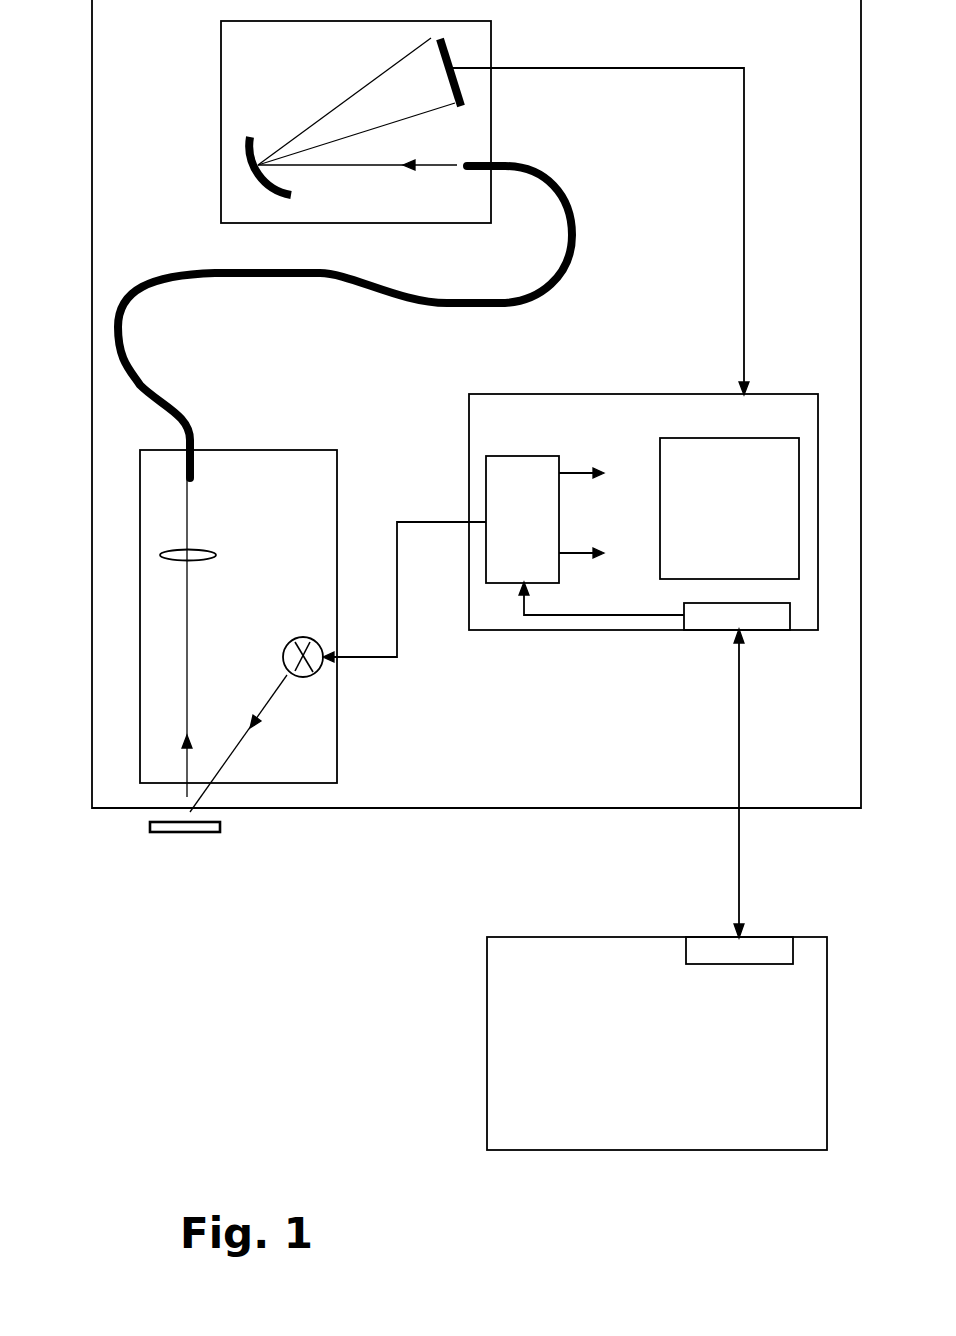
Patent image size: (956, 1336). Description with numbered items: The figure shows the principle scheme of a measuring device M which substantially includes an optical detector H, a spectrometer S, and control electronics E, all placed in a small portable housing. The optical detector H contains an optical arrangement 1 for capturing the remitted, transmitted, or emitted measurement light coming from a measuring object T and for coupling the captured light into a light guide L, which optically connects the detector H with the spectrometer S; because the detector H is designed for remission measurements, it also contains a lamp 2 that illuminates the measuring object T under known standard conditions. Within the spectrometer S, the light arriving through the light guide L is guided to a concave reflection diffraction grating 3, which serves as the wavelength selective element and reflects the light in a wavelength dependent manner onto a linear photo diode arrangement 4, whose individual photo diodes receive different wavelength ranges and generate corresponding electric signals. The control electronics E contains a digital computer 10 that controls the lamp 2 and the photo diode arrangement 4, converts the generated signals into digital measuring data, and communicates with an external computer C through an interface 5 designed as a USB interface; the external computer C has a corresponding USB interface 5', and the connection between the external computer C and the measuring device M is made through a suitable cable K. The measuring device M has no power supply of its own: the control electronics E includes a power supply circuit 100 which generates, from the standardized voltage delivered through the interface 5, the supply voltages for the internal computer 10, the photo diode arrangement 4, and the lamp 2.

The optical arrangement 1 is at (205, 555).
The lamp 2 is at (293, 652).
The concave reflection diffraction grating 3 is at (262, 187).
The linear photo diode arrangement 4 is at (445, 52).
The interface 5 is at (664, 652).
The USB interface 5' is at (738, 999).
The digital computer 10 is at (743, 478).
The power supply circuit 100 is at (510, 485).
The spectrometer S is at (248, 70).
The light guide L is at (253, 277).
The optical detector H is at (320, 712).
The measuring object T is at (155, 832).
The measuring device M is at (488, 790).
The control electronics E is at (607, 422).
The cable K is at (741, 842).
The external computer C is at (533, 1039).